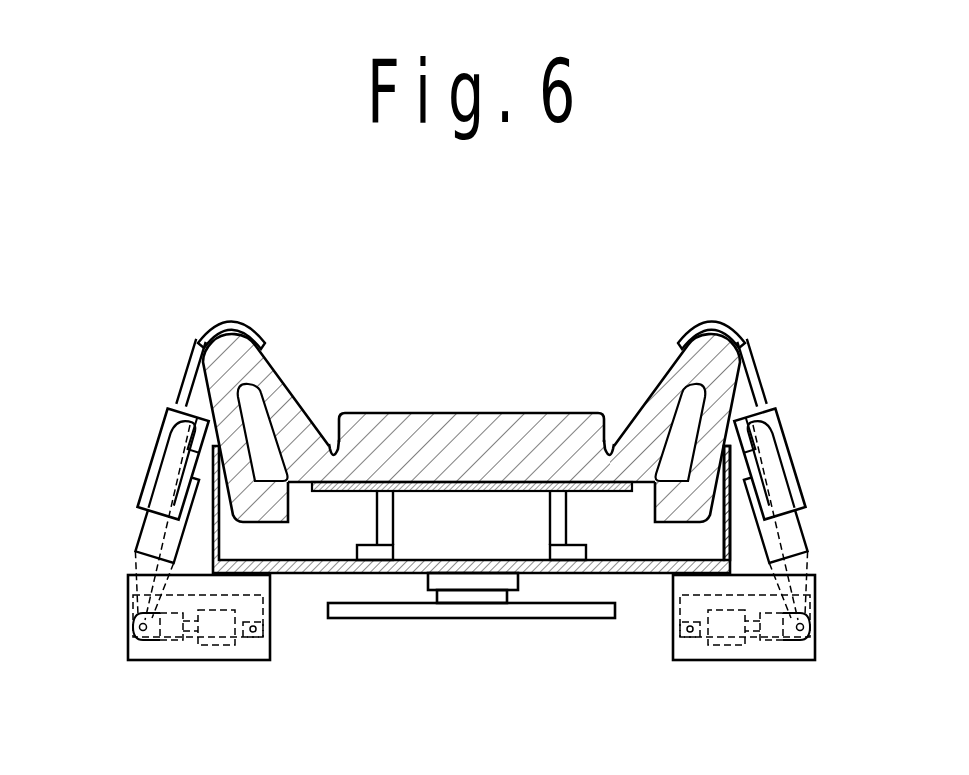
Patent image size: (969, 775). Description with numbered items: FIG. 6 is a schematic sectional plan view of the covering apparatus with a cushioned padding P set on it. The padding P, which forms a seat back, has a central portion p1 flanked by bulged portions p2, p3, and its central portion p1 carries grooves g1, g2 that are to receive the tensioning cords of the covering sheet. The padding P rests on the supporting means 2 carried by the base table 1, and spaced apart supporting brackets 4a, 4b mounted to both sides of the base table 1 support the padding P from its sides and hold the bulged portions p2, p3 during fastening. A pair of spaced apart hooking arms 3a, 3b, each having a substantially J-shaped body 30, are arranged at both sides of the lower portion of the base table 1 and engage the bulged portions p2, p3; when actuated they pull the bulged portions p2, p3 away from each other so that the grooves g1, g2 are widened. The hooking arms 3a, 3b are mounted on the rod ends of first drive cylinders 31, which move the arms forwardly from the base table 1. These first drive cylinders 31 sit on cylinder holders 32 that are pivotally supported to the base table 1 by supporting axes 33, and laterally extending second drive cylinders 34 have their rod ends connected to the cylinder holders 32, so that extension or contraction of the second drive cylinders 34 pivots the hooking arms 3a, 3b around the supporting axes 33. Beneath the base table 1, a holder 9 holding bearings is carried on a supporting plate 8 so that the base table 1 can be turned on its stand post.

The cushioned padding P is at (471, 385).
The central portion p1 is at (522, 435).
The bulged portion p2 is at (665, 382).
The bulged portion p3 is at (273, 380).
The groove g1 is at (622, 445).
The groove g2 is at (325, 425).
The base table 1 is at (500, 560).
The supporting means 2 is at (448, 489).
The hooking arm 3a is at (776, 385).
The hooking arm 3b is at (181, 358).
The supporting bracket 4a is at (722, 537).
The supporting bracket 4b is at (233, 545).
The supporting plate 8 is at (534, 612).
The holder 9 is at (433, 590).
The J-shaped body 30 is at (223, 320).
The first drive cylinder 31 is at (170, 430).
The cylinder holder 32 is at (145, 530).
The supporting axis 33 is at (128, 586).
The second drive cylinder 34 is at (216, 648).